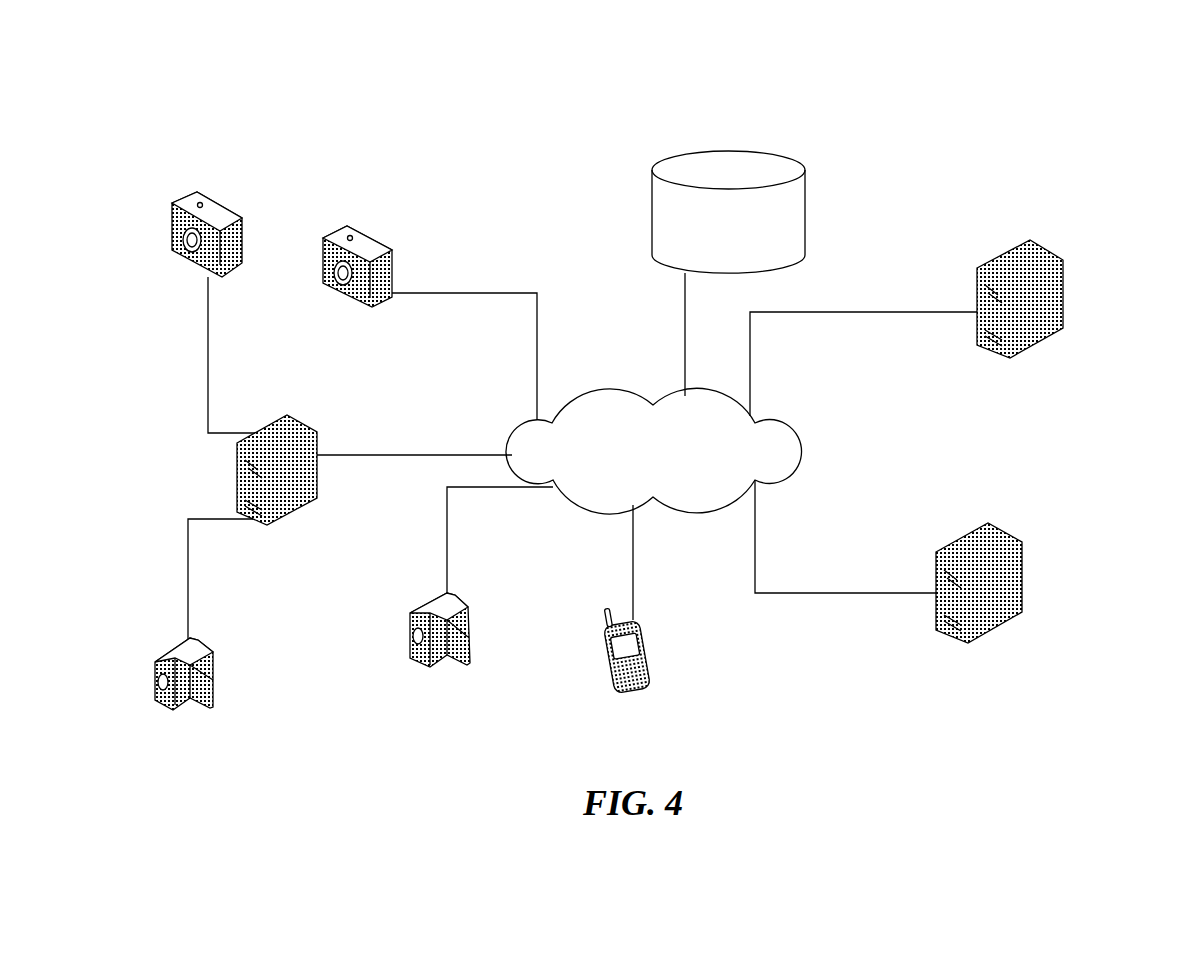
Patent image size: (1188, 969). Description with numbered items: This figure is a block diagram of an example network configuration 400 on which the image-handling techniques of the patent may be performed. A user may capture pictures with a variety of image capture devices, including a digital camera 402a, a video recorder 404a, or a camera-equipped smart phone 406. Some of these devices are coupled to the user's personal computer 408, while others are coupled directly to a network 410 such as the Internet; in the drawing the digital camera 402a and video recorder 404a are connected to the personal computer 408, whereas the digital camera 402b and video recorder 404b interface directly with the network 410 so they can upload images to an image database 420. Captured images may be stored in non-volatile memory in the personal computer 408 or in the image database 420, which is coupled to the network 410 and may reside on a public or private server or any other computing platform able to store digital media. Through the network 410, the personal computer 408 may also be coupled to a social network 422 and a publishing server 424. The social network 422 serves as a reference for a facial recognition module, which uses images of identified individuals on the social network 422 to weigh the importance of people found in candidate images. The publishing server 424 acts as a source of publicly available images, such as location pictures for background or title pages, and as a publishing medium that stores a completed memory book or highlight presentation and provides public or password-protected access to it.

The network configuration 400 is at (1094, 96).
The digital camera 402a is at (212, 197).
The digital camera 402b is at (377, 232).
The video recorder 404a is at (200, 638).
The video recorder 404b is at (470, 615).
The camera-equipped smart phone 406 is at (645, 665).
The personal computer 408 is at (305, 425).
The network 410 is at (797, 428).
The image database 420 is at (780, 152).
The social network 422 is at (1037, 247).
The publishing server 424 is at (997, 530).